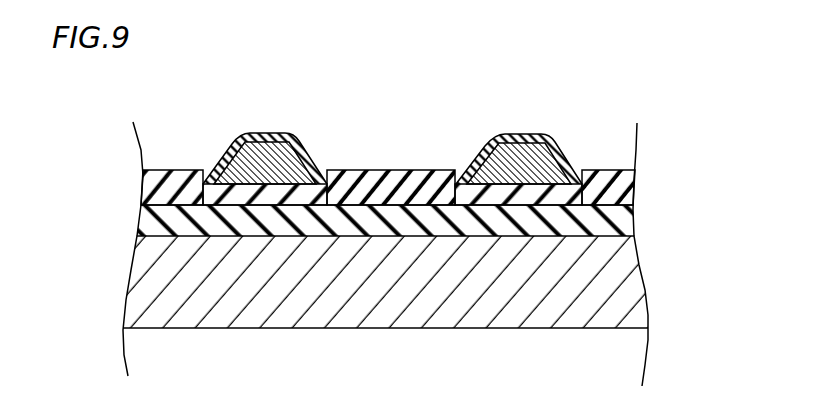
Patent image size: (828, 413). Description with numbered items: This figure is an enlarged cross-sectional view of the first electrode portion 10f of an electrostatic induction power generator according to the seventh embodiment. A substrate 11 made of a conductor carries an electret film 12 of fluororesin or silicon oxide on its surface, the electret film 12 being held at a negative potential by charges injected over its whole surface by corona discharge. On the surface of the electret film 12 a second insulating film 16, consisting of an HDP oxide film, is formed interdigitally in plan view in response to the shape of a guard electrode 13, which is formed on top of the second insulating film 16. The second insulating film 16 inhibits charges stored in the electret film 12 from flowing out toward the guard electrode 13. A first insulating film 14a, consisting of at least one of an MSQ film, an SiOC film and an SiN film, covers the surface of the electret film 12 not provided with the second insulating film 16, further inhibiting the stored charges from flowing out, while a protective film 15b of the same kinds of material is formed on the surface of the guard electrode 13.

The first electrode portion 10f is at (629, 91).
The substrate 11 is at (143, 292).
The electret film 12 is at (153, 223).
The guard electrode 13 is at (273, 152).
The first insulating film 14a is at (160, 180).
The protective film 15b is at (300, 150).
The second insulating film 16 is at (215, 190).